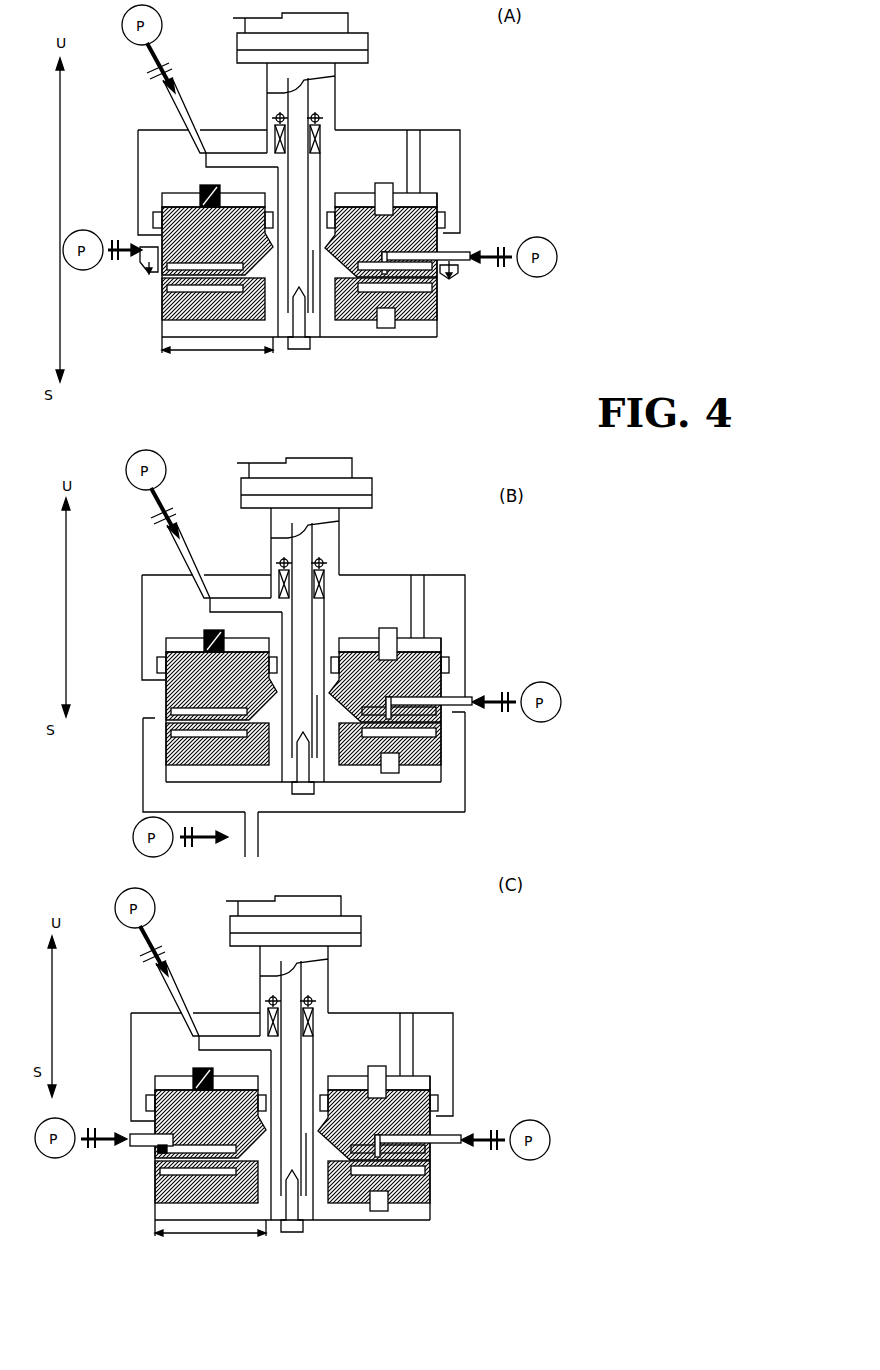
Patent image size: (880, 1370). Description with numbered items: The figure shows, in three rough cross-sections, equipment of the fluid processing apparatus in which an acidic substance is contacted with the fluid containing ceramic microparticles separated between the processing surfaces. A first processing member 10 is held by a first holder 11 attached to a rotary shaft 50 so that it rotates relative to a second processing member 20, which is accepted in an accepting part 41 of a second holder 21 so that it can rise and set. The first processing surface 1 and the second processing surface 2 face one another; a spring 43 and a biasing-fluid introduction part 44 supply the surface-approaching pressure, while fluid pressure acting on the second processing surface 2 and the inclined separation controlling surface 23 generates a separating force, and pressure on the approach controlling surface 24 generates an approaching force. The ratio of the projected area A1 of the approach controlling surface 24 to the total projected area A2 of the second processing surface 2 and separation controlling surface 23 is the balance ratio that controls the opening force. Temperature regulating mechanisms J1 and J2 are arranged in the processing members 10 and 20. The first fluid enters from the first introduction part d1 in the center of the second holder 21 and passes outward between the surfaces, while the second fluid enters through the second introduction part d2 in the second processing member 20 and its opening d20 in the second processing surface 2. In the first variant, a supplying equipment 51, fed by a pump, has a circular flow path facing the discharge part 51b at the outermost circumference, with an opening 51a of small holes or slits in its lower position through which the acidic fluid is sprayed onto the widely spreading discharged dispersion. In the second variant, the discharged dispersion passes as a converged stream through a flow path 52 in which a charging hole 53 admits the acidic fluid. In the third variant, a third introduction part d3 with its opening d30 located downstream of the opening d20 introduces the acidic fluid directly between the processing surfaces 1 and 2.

The first introduction part d1 is at (178, 115).
The accepting part 41 is at (247, 198).
The spring 43 is at (162, 197).
The second processing member 20 is at (165, 205).
The supplying equipment 51 is at (147, 270).
The first processing surface 1 is at (162, 297).
The temperature regulating mechanism J1 is at (162, 313).
The total projected area A2 is at (212, 350).
The projected area of the approach controlling surface A1 is at (276, 290).
The rotary shaft 50 is at (312, 313).
The separation controlling surface 23 is at (325, 250).
The approach controlling surface 24 is at (312, 200).
The biasing-fluid introduction part 44 is at (410, 147).
The second holder 21 is at (445, 162).
The opening of the second introduction part d20 is at (415, 205).
The temperature regulating mechanism J2 is at (440, 240).
The second introduction part d2 is at (413, 262).
The opening 51a is at (462, 272).
The discharge part 51b is at (440, 277).
The first processing member 10 is at (437, 312).
The first holder 11 is at (412, 327).
The second processing surface 2 is at (173, 713).
The flow path 52 is at (311, 834).
The charging hole 53 is at (304, 788).
The third introduction part d3 is at (137, 1130).
The opening of the third introduction part d30 is at (127, 1159).